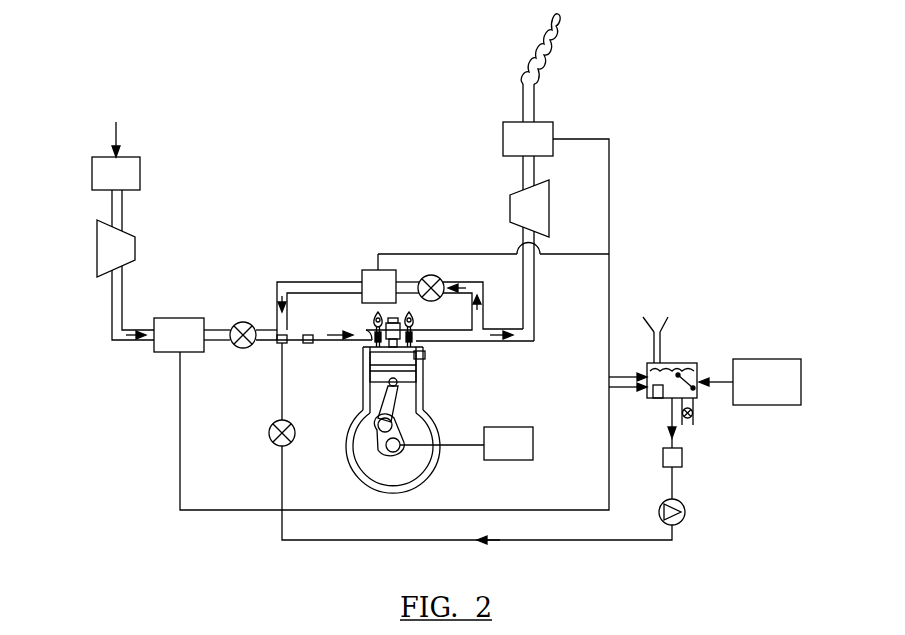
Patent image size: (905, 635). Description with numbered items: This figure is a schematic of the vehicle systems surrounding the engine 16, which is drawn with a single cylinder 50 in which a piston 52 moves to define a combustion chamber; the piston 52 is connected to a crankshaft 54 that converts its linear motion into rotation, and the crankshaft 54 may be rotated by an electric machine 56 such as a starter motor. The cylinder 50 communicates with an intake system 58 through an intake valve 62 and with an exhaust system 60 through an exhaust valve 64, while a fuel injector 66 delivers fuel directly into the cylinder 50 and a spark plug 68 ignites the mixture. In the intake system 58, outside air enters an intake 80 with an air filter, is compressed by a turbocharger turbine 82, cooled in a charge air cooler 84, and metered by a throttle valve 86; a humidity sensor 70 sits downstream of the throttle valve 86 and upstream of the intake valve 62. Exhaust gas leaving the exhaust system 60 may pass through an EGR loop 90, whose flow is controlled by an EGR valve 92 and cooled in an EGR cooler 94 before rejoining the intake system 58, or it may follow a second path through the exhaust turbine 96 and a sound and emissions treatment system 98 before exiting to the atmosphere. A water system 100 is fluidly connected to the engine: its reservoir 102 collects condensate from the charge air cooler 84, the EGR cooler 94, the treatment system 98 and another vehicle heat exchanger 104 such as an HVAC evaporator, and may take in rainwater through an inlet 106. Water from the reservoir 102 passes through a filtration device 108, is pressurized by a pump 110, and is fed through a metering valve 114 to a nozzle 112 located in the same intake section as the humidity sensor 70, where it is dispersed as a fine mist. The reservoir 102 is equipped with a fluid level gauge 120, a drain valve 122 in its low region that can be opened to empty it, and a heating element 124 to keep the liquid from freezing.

The engine 16 is at (415, 358).
The cylinder 50 is at (367, 369).
The piston 52 is at (378, 387).
The crankshaft 54 is at (373, 452).
The electric machine 56 is at (499, 452).
The intake system 58 is at (242, 202).
The exhaust system 60 is at (414, 160).
The intake valve 62 is at (372, 328).
The exhaust valve 64 is at (416, 328).
The fuel injector 66 is at (425, 355).
The spark plug 68 is at (396, 318).
The humidity sensor 70 is at (306, 346).
The intake 80 is at (130, 175).
The turbine 82 is at (120, 245).
The charge air cooler 84 is at (177, 327).
The throttle valve 86 is at (243, 322).
The EGR loop 90 is at (294, 262).
The EGR valve 92 is at (434, 276).
The EGR cooler 94 is at (370, 270).
The turbine 96 is at (527, 208).
The sound and/or emissions treatment system 98 is at (525, 143).
The water system 100 is at (756, 501).
The reservoir 102 is at (686, 362).
The vehicle system heat exchanger 104 is at (773, 359).
The inlet 106 is at (652, 342).
The filtration device 108 is at (662, 460).
The pump 110 is at (685, 513).
The nozzle 112 is at (279, 348).
The metering valve 114 is at (269, 433).
The fluid level gauge 120 is at (700, 390).
The drain valve 122 is at (689, 424).
The heating element 124 is at (658, 398).